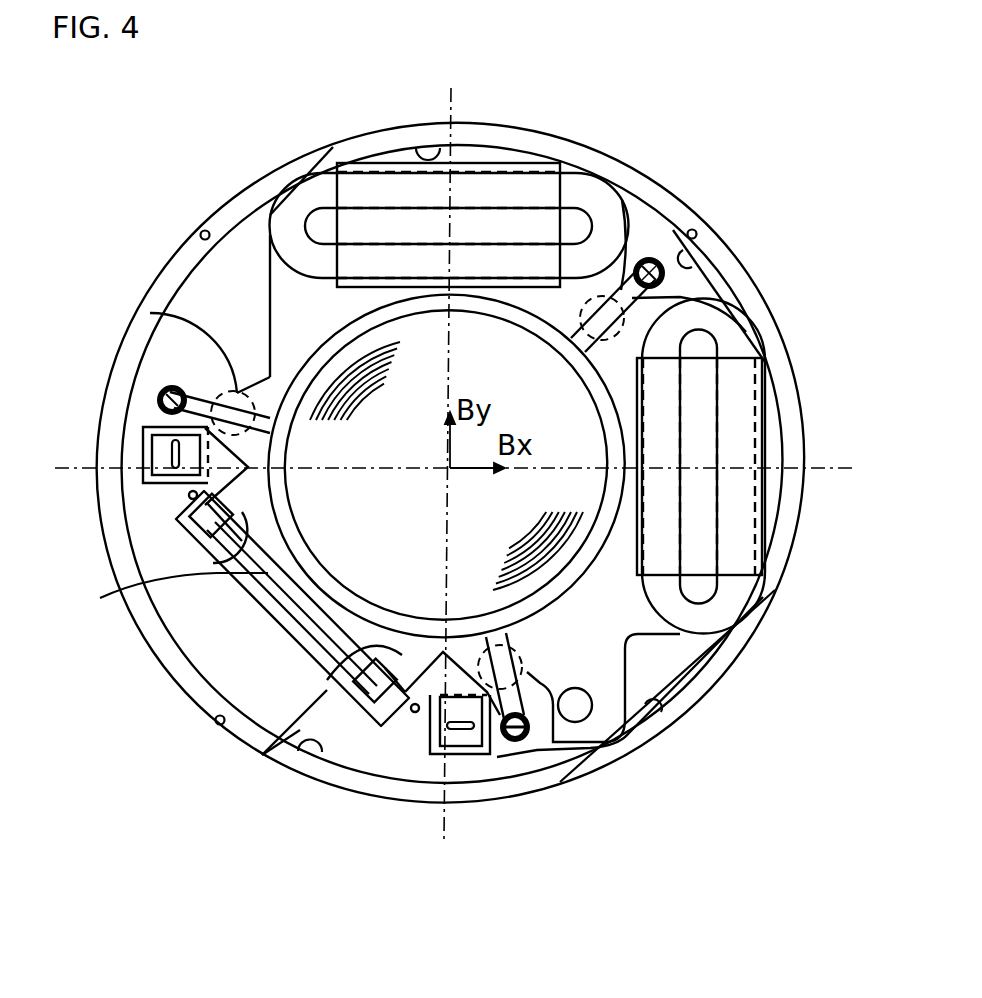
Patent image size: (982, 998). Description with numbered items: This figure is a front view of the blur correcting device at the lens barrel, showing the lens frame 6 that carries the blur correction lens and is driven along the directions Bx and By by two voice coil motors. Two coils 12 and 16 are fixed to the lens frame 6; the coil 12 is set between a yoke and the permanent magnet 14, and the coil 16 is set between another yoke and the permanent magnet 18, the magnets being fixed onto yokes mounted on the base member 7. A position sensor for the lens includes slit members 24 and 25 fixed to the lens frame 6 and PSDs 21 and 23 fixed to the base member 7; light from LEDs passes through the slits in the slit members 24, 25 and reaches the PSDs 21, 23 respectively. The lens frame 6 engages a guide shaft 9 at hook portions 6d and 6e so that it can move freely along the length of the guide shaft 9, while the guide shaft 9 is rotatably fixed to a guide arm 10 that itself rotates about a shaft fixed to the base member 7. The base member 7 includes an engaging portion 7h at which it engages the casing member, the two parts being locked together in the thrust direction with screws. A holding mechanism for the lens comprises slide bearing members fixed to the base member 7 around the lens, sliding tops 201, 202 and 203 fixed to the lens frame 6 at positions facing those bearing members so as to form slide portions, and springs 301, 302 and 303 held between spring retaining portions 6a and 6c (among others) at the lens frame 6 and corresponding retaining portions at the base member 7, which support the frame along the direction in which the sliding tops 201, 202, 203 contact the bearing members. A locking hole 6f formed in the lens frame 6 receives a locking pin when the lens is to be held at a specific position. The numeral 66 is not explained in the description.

The lens frame 6 is at (613, 668).
The spring retaining portion 6a is at (641, 262).
The spring retaining portion 6c is at (505, 745).
The hook portion 6d is at (160, 602).
The hook portion 6e is at (300, 730).
The locking hole 6f is at (582, 712).
The base member 7 is at (718, 672).
The engaging portion 7h is at (440, 150).
The guide shaft 9 is at (256, 612).
The guide arm 10 is at (272, 632).
The coil 12 is at (727, 605).
The permanent magnet 14 is at (740, 527).
The coil 16 is at (591, 192).
The permanent magnet 18 is at (526, 190).
The PSD 21 is at (145, 455).
The PSD 23 is at (432, 757).
The slit member 24 is at (189, 456).
The slit member 25 is at (470, 745).
The yoke arm 66 is at (140, 318).
The sliding top 201 is at (668, 278).
The sliding top 202 is at (168, 385).
The sliding top 203 is at (540, 742).
The spring 301 is at (661, 258).
The spring 302 is at (211, 413).
The spring 303 is at (520, 742).